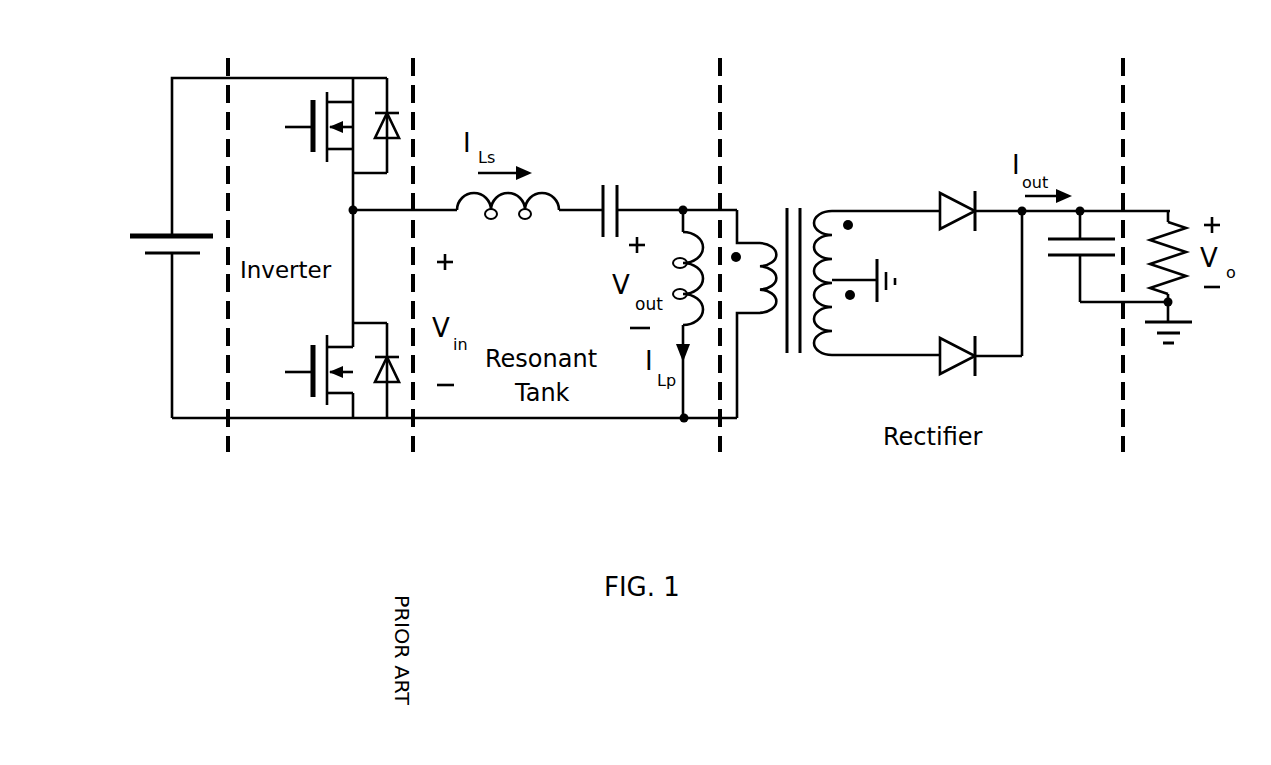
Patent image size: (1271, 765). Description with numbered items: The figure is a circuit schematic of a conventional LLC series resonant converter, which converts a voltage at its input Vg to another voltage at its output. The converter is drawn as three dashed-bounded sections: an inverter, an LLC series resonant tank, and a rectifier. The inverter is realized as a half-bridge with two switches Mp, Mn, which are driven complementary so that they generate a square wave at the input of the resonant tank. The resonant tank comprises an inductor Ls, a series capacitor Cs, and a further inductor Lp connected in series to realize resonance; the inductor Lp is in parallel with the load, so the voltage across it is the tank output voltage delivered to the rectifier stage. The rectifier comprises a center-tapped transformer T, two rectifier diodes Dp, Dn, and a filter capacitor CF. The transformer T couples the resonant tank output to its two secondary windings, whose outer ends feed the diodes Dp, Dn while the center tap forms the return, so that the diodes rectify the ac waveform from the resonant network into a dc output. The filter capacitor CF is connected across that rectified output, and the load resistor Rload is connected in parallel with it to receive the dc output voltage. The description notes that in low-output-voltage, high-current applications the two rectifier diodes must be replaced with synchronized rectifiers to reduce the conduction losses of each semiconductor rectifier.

The input voltage Vg is at (170, 223).
The switch Mp is at (318, 125).
The switch Mn is at (325, 370).
The inductor Ls is at (508, 227).
The series capacitor Cs is at (591, 203).
The inductor Lp is at (681, 292).
The transformer n:1:1 T is at (838, 293).
The rectifier diode Dp is at (1052, 193).
The rectifier diode Dn is at (984, 308).
The filter capacitor CF is at (1102, 266).
The load resistor Rload is at (1160, 254).